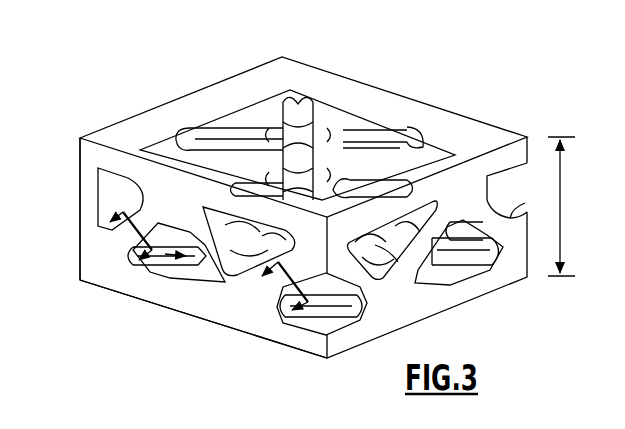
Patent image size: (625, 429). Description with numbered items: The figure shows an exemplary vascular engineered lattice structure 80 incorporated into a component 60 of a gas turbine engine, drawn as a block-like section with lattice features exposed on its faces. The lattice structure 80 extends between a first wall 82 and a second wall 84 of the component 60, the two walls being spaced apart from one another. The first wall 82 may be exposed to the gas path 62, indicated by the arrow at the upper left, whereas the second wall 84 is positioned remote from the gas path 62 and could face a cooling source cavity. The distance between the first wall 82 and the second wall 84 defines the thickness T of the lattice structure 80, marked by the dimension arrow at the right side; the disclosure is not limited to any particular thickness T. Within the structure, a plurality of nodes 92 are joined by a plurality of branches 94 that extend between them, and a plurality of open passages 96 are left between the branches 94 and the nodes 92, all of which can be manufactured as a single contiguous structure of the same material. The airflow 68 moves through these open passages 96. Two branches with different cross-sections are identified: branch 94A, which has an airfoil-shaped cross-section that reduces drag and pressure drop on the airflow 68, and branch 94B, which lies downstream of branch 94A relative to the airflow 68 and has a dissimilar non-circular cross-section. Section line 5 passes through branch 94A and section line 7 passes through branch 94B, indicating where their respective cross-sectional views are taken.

The component 60 is at (440, 62).
The gas path 62 is at (113, 100).
The airflow 68 is at (98, 186).
The vascular engineered lattice structure 80 is at (282, 100).
The first wall 82 is at (165, 116).
The second wall 84 is at (172, 305).
The nodes 92 is at (350, 118).
The branches 94 is at (303, 120).
The branch 94A is at (127, 237).
The branch 94B is at (258, 314).
The open passages 96 is at (332, 198).
The section line 5- 5 is at (144, 239).
The section line 7- 7 is at (256, 284).
The thickness T is at (574, 206).